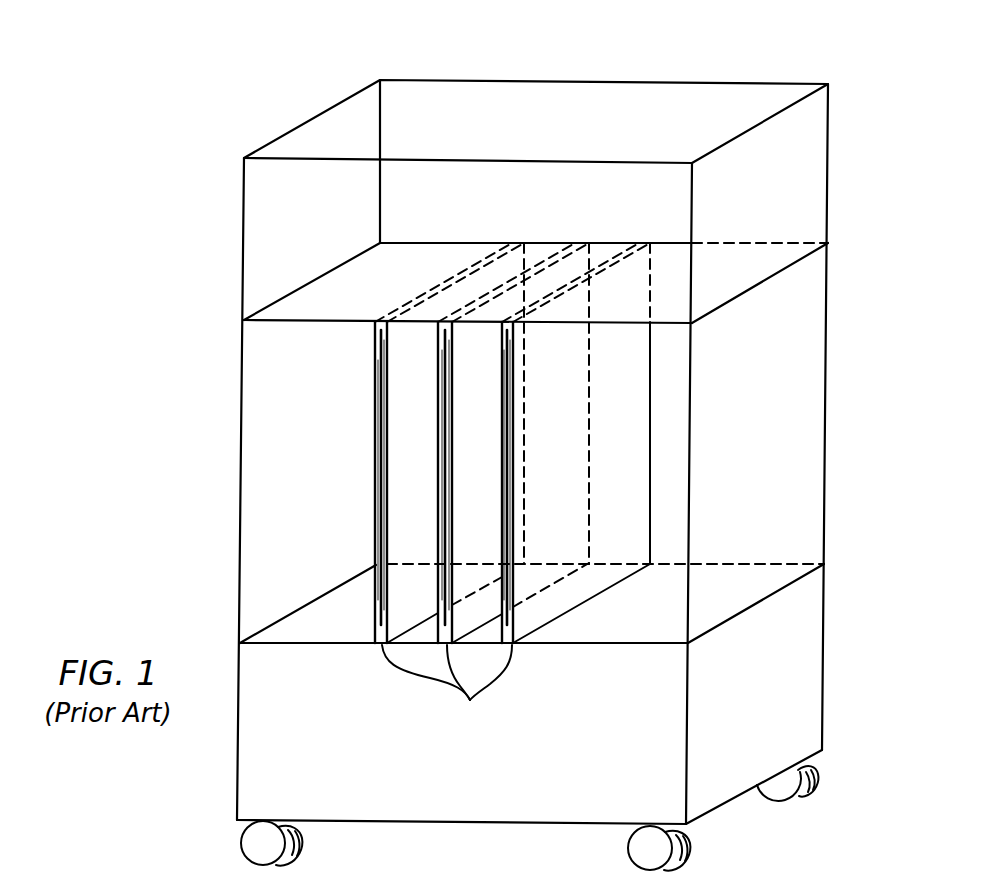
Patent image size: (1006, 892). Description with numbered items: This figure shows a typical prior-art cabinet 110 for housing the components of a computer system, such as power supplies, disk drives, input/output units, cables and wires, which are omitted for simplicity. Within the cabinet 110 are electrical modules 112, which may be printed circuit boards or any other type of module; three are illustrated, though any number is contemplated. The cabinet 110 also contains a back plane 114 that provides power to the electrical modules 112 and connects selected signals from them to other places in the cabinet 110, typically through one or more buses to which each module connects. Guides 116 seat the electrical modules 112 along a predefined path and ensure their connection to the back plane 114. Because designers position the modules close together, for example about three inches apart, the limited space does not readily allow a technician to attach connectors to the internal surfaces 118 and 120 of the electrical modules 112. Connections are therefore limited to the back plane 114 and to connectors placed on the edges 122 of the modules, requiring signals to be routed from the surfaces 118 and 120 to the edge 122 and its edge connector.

The cabinet 110 is at (904, 109).
The electrical modules 112 is at (460, 267).
The back plane 114 is at (790, 335).
The guides 116 is at (447, 688).
The internal surface 118 is at (410, 480).
The internal surface 120 is at (499, 380).
The edges 122 is at (497, 585).